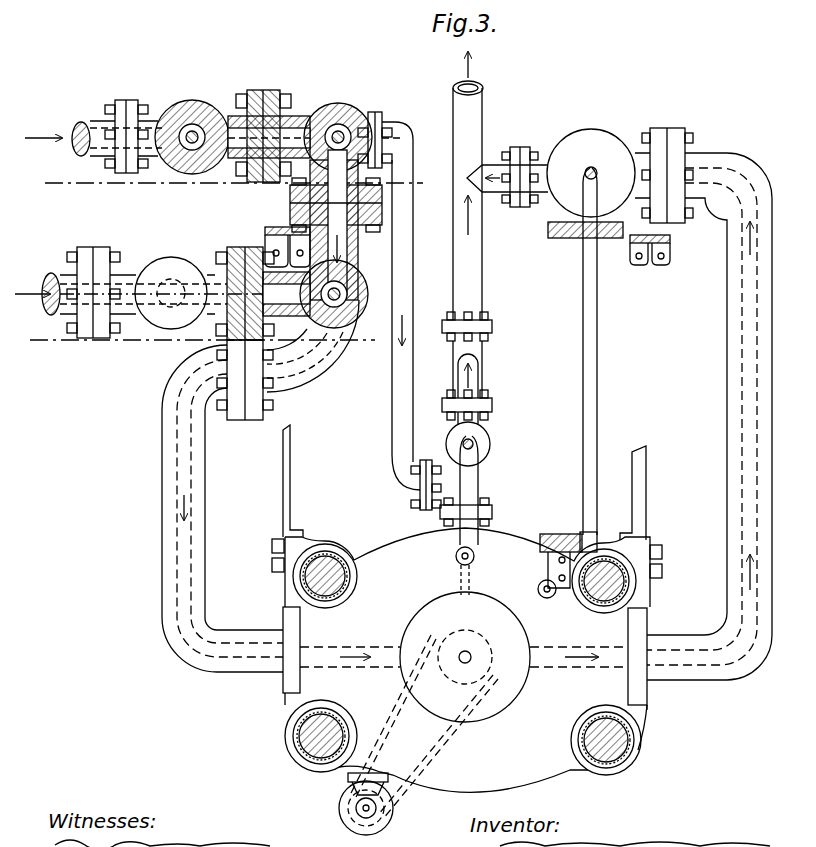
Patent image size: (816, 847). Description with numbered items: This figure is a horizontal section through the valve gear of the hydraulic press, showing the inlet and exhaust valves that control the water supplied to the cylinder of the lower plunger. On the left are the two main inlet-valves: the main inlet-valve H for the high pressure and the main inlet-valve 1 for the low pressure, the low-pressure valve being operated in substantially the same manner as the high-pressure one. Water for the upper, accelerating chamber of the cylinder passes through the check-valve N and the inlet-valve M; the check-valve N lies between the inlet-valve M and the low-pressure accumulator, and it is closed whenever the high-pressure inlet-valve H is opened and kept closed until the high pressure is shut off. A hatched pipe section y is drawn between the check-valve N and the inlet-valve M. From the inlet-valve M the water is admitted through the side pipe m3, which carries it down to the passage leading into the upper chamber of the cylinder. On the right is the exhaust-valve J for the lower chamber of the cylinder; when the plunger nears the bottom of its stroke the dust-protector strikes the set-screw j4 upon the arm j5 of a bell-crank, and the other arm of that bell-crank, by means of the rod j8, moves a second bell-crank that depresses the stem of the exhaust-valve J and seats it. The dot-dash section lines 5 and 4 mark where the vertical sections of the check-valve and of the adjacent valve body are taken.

The pipe section between valves y is at (198, 103).
The check-valve N is at (183, 150).
The inlet-valve M is at (346, 126).
The main inlet-valve H is at (172, 282).
The main inlet-valve 1 is at (348, 290).
The section line 5 5 is at (230, 185).
The section line 4 4 is at (201, 341).
The exhaust-valve J is at (607, 156).
The rod j8 is at (598, 332).
The arm of the bell-crank j5 is at (545, 564).
The set-screw j4 is at (548, 596).
The side pipe m3 is at (404, 403).